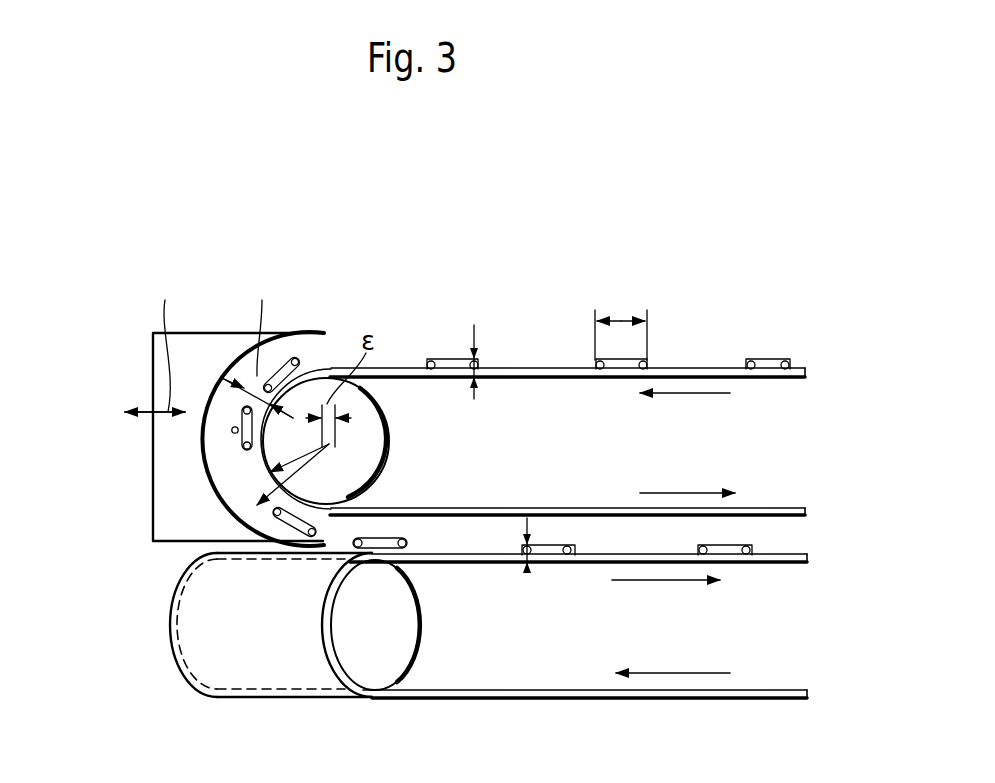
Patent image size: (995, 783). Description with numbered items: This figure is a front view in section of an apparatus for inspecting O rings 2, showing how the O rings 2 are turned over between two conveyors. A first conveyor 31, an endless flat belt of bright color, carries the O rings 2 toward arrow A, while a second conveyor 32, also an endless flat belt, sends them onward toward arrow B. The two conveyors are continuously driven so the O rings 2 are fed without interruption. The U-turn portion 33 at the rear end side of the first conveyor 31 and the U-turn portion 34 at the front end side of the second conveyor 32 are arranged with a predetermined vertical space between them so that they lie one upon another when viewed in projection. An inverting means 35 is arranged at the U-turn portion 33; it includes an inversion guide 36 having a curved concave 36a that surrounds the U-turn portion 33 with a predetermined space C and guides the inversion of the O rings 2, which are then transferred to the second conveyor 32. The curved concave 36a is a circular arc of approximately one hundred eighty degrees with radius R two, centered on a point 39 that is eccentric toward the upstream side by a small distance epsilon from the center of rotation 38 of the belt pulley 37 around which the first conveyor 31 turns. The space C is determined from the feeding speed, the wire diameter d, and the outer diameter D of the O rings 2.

The O ring 2 is at (450, 358).
The first conveyor 31 is at (700, 366).
The second conveyor 32 is at (490, 548).
The U-turn portion 33 is at (265, 458).
The U-turn portion 34 is at (287, 665).
The inverting means 35 is at (207, 296).
The inversion guide 36 is at (150, 380).
The curved concave 36a is at (233, 431).
The belt pulley 37 is at (370, 408).
The center of rotation 38 is at (338, 448).
The point 39 is at (343, 442).